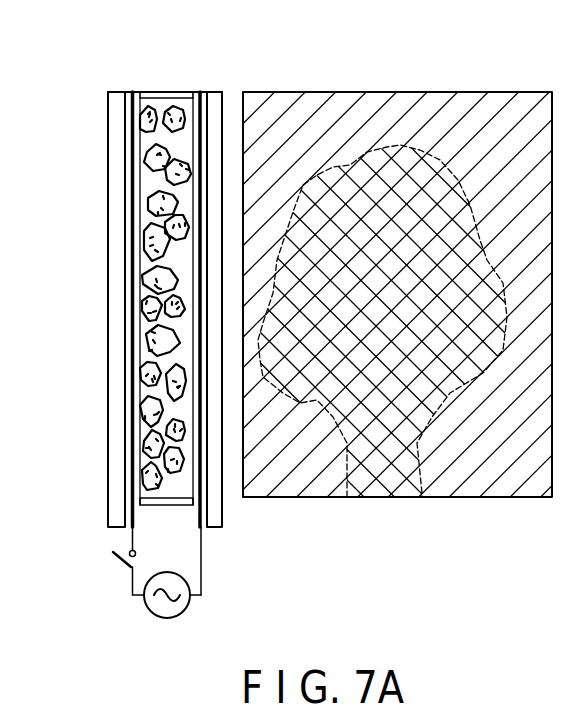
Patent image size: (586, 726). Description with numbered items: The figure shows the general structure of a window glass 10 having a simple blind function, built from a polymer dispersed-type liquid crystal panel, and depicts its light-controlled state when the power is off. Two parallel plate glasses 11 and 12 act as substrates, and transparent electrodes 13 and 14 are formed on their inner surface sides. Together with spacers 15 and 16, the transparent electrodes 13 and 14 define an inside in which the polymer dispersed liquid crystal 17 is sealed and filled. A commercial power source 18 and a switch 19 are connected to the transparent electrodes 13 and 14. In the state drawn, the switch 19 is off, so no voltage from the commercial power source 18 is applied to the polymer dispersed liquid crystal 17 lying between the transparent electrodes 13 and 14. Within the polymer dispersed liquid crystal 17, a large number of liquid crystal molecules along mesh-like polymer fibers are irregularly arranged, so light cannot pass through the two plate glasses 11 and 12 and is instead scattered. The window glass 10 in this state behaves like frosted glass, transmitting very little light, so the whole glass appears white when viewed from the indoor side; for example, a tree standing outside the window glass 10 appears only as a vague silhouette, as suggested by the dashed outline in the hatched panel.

The window glass 10 is at (508, 92).
The plate glass 11 is at (119, 91).
The plate glass 12 is at (212, 91).
The transparent electrode 13 is at (133, 90).
The transparent electrode 14 is at (200, 90).
The spacer 15 is at (165, 91).
The spacer 16 is at (163, 505).
The polymer dispersed liquid crystal 17 is at (138, 300).
The commercial power source 18 is at (167, 618).
The switch 19 is at (115, 553).